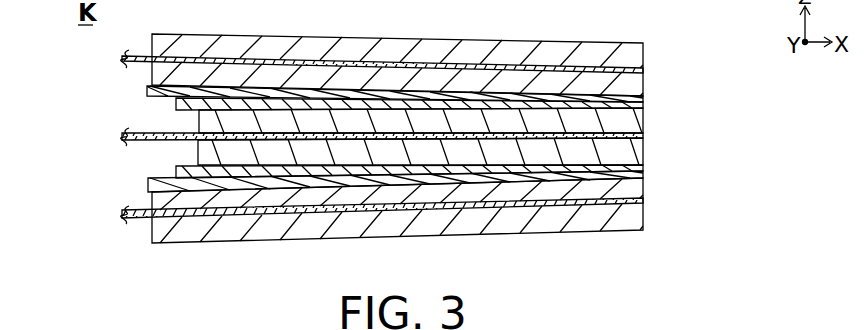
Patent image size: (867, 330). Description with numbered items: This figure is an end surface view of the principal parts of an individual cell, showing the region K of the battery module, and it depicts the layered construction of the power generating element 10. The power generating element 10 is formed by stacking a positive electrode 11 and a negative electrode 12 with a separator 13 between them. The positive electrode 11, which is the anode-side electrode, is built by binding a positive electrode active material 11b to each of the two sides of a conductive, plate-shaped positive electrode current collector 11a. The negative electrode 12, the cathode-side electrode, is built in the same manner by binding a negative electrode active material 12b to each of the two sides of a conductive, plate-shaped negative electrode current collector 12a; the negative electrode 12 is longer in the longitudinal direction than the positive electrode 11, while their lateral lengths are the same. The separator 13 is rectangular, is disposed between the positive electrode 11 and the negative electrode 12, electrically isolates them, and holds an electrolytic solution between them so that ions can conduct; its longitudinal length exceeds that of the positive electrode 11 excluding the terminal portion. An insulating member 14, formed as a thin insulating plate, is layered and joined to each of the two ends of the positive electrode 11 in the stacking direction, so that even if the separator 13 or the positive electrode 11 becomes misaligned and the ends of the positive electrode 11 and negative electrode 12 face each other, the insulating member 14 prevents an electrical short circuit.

The power generating element 10 is at (763, 38).
The positive electrode 11 is at (728, 170).
The positive electrode current collector 11a is at (643, 143).
The positive electrode active material 11b is at (643, 138).
The negative electrode 12 is at (728, 47).
The negative electrode current collector 12a is at (643, 72).
The negative electrode active material 12b is at (643, 58).
The separator 13 is at (643, 106).
The insulating member 14 is at (182, 104).